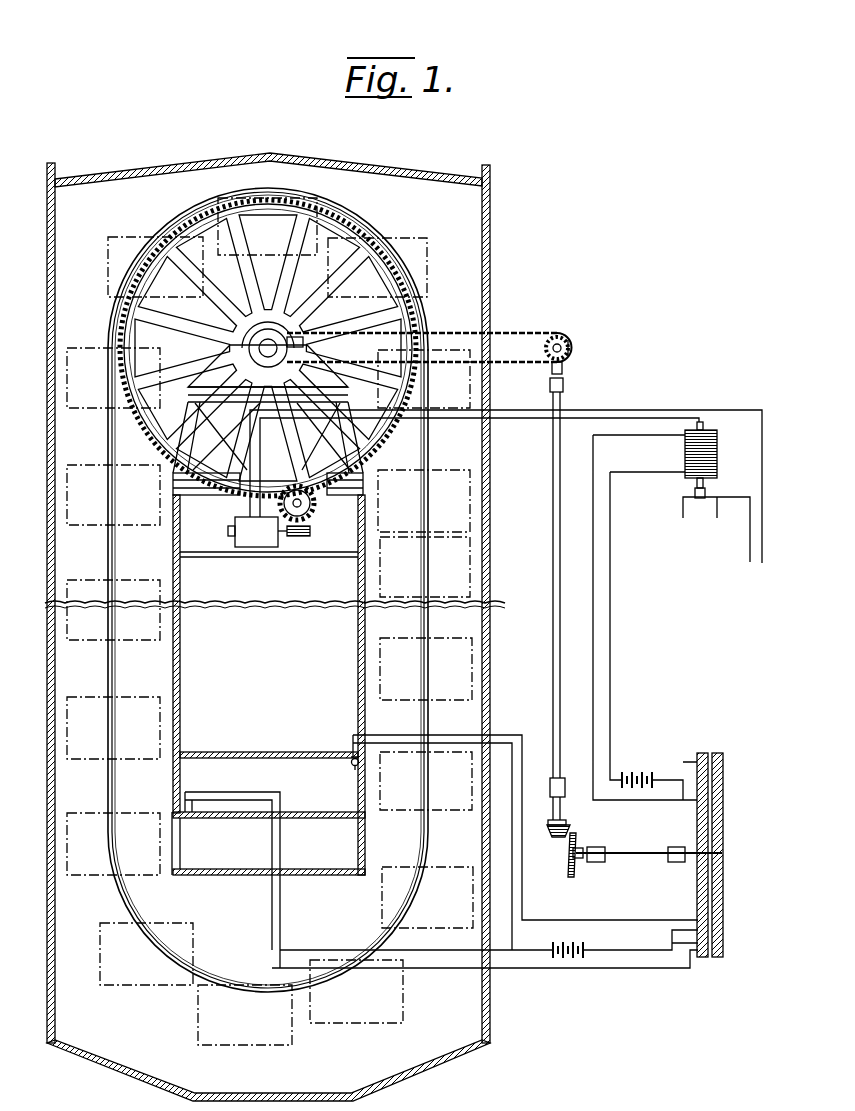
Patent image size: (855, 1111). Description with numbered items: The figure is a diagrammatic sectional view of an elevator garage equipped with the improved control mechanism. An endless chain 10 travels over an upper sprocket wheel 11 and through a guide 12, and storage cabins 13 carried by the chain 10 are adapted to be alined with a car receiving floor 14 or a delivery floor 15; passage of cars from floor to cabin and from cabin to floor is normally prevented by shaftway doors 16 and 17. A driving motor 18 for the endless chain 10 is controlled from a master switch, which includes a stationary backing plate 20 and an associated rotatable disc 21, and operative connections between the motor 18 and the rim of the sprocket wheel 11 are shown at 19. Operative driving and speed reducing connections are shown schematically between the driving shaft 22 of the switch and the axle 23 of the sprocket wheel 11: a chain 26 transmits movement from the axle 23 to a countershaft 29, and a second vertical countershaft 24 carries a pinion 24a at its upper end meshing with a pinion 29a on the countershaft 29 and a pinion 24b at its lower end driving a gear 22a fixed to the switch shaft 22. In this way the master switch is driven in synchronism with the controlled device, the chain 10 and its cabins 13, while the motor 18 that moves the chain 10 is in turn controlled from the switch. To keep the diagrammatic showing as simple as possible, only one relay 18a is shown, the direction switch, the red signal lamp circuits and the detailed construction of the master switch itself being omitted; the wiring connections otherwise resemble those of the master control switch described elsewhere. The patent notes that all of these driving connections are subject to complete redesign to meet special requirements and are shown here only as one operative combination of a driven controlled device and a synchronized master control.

The endless chain 10 is at (428, 569).
The upper sprocket wheel 11 is at (340, 229).
The guide 12 is at (425, 672).
The storage cabins 13 is at (463, 390).
The car receiving floor 14 is at (330, 876).
The delivery floor 15 is at (302, 812).
The shaftway door 16 is at (175, 853).
The shaftway door 17 is at (372, 793).
The driving motor 18 is at (240, 523).
The relay 18a is at (716, 450).
The operative connections 19 is at (300, 506).
The stationary backing plate 20 is at (697, 826).
The rotatable disc 21 is at (723, 826).
The driving shaft 22 is at (653, 857).
The gear 22a is at (571, 875).
The axle 23 is at (265, 352).
The vertical countershaft 24 is at (553, 545).
The pinion 24a is at (570, 368).
The pinion 24b is at (572, 832).
The chain 26 is at (522, 318).
The countershaft 29 is at (577, 318).
The pinion 29a is at (575, 348).